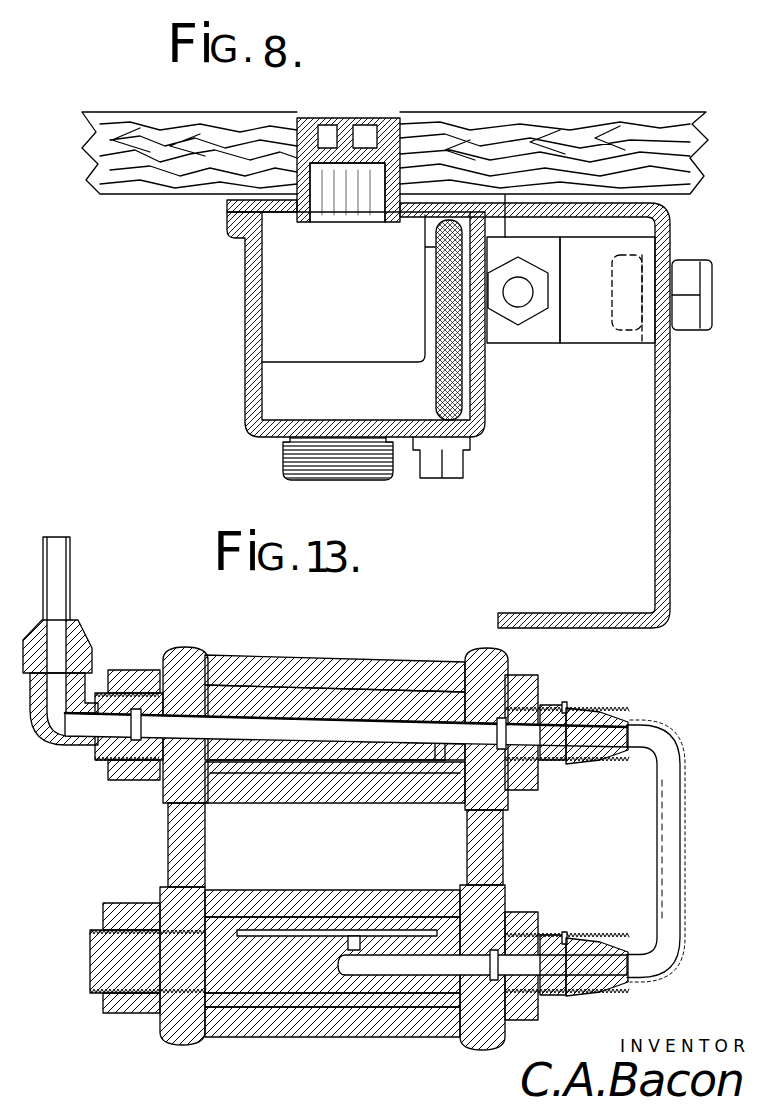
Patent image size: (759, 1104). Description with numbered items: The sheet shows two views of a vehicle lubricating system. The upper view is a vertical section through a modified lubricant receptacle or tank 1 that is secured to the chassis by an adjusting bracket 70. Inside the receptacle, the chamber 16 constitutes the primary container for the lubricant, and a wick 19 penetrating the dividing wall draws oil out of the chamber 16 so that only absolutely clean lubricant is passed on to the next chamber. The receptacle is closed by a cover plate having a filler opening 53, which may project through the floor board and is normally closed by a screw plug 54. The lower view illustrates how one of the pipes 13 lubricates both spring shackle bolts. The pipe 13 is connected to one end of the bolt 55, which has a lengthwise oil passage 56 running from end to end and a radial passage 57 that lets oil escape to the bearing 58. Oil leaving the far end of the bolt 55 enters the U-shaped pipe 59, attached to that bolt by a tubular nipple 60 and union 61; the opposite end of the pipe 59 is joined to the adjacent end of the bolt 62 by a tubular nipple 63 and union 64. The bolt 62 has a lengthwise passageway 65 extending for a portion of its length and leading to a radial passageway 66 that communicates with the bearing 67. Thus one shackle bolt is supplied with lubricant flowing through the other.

In FIG. 8, the casing 1 is at (245, 249).
In FIG. 8, the chamber 16 is at (408, 405).
In FIG. 8, the wick 19 is at (447, 380).
In FIG. 8, the filler opening 53 is at (342, 182).
In FIG. 8, the screw plug 54 is at (347, 128).
In FIG. 8, the adjusting bracket 70 is at (601, 284).
In FIG. 13, the pipe 13 is at (58, 567).
In FIG. 13, the bolt 55 is at (357, 710).
In FIG. 13, the lengthwise oil passage 56 is at (287, 720).
In FIG. 13, the radial passage 57 is at (356, 760).
In FIG. 13, the bearing 58 is at (401, 773).
In FIG. 13, the U-shaped pipe 59 is at (673, 829).
In FIG. 13, the tubular nipple 60 is at (551, 706).
In FIG. 13, the union 61 is at (604, 716).
In FIG. 13, the bolt 62 is at (283, 963).
In FIG. 13, the tubular nipple 63 is at (548, 935).
In FIG. 13, the union 64 is at (595, 939).
In FIG. 13, the lengthwise passageway 65 is at (422, 965).
In FIG. 13, the radial passageway 66 is at (357, 950).
In FIG. 13, the bearing 67 is at (363, 1000).